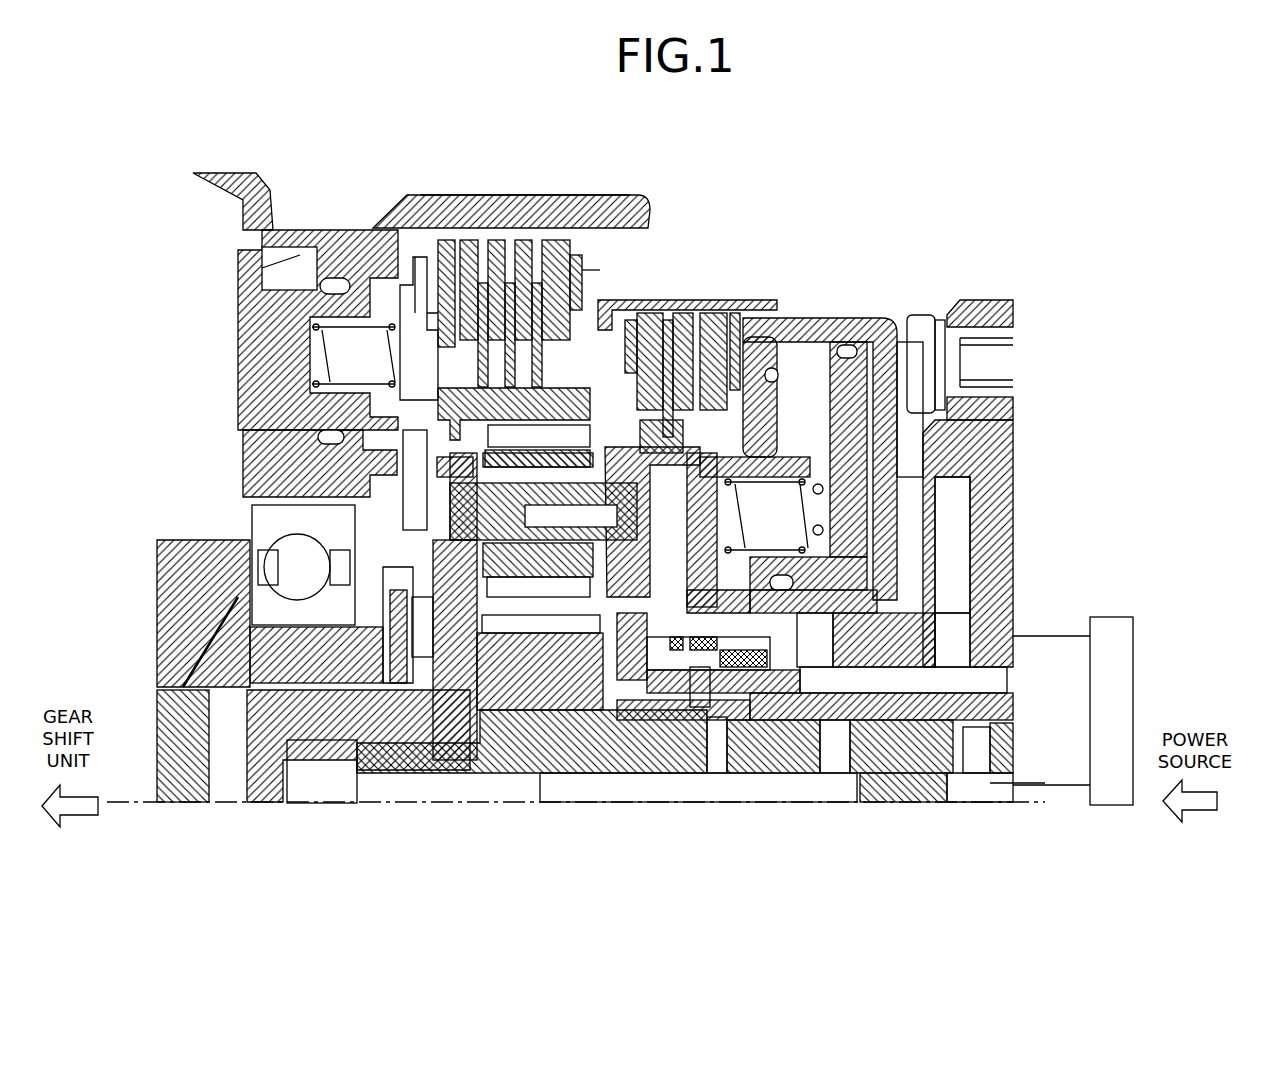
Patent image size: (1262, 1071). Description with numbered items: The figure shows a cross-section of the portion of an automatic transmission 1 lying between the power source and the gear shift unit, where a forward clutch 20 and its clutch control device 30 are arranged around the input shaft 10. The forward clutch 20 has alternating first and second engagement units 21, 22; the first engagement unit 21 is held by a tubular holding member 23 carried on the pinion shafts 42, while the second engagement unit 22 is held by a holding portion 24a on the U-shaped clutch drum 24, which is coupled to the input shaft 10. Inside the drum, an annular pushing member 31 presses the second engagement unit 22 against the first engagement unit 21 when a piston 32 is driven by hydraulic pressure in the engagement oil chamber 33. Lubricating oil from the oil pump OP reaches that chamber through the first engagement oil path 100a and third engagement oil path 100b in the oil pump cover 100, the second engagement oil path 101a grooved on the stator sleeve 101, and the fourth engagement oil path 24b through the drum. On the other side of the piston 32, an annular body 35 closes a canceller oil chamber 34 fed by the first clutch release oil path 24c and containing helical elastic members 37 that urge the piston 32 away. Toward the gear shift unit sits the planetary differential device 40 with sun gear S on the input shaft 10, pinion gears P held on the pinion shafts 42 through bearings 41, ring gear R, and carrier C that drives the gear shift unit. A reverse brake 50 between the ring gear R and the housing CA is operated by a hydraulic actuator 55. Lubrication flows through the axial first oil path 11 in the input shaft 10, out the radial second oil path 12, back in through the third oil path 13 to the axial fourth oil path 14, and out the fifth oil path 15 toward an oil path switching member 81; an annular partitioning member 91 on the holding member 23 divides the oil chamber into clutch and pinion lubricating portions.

The automatic transmission 1 is at (148, 170).
The input shaft 10 is at (615, 757).
The first oil path 11 is at (1000, 795).
The second oil path 12 is at (983, 768).
The third oil path 13 is at (827, 768).
The fourth oil path 14 is at (690, 790).
The fifth oil path 15 is at (716, 768).
The forward clutch 20 is at (697, 250).
The first engagement unit 21 is at (642, 445).
The second engagement unit 22 is at (675, 313).
The holding member 23 is at (612, 455).
The clutch drum 24 is at (850, 335).
The holding portion 24a is at (618, 300).
The fourth engagement oil path 24b is at (860, 590).
The first clutch release oil path 24c is at (735, 582).
The clutch control device 30 is at (838, 243).
The pushing member 31 is at (733, 316).
The piston 32 is at (764, 335).
The engagement oil chamber 33 is at (880, 500).
The canceller oil chamber 34 is at (815, 378).
The annular body 35 is at (925, 435).
The elastic member 37 is at (820, 478).
The differential device 40 is at (517, 815).
The bearing 41 is at (430, 483).
The pinion shaft 42 is at (403, 540).
The reverse brake 50 is at (522, 183).
The hydraulic actuator 55 is at (336, 227).
The oil path switching member 81 is at (690, 655).
The partitioning member 91 is at (660, 530).
The oil pump cover 100 is at (1020, 512).
The first engagement oil path 100a is at (940, 550).
The third engagement oil path 100b is at (940, 605).
The stator sleeve 101 is at (960, 680).
The second engagement oil path 101a is at (1000, 690).
The housing CA is at (460, 195).
The ring gear R is at (432, 410).
The pinion gear P is at (570, 597).
The sun gear S is at (553, 683).
The carrier C is at (315, 748).
The oil pump OP is at (1110, 617).